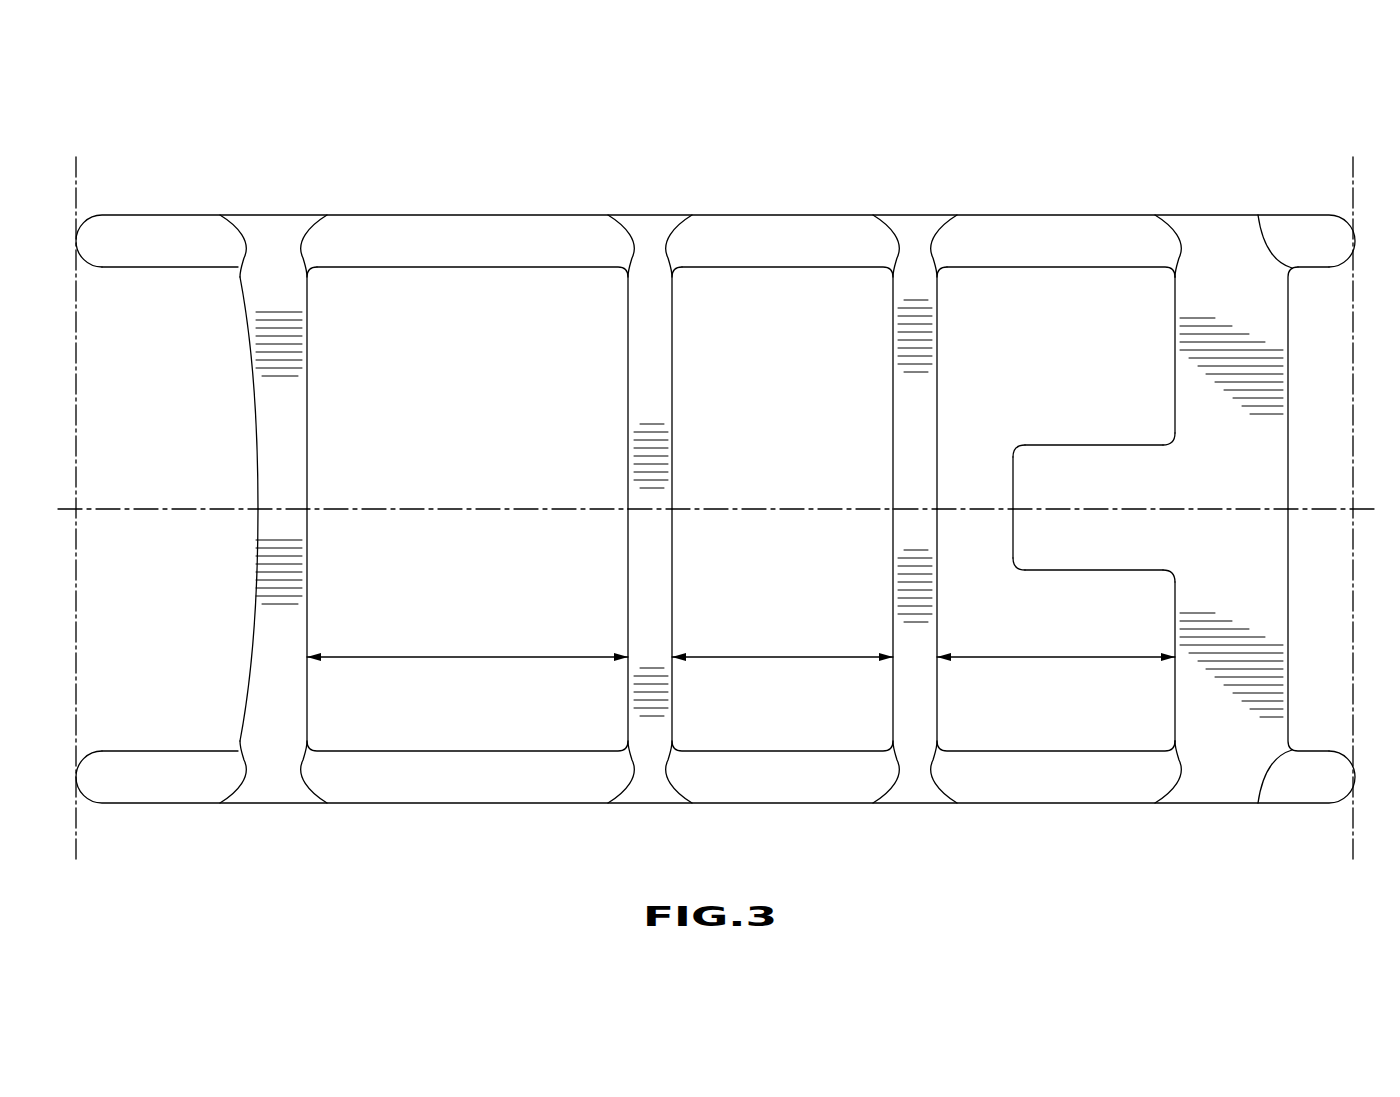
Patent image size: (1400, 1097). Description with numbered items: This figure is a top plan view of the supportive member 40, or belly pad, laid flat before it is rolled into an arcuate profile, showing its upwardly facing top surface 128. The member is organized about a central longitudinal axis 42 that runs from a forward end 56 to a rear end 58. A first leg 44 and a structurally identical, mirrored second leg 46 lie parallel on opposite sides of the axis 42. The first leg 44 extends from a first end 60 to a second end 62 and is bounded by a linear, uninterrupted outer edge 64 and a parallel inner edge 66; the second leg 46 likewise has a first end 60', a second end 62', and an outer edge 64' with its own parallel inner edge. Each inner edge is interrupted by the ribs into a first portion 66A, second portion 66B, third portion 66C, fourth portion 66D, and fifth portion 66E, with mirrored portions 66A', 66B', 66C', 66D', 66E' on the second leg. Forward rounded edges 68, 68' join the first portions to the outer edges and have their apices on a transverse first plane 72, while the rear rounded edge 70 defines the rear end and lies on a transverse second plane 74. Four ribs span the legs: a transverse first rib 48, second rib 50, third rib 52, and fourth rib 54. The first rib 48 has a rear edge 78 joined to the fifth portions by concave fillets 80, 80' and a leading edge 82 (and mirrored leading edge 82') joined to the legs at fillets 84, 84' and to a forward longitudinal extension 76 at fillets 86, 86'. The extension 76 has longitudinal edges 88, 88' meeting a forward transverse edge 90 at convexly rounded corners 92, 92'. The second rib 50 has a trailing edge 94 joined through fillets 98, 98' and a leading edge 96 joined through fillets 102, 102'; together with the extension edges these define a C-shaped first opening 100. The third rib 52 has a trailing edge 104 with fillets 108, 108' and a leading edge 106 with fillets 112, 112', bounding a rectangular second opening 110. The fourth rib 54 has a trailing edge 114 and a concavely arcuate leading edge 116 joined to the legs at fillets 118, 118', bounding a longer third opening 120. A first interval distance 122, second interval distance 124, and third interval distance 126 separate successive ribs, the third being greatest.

The supportive member 40 is at (1030, 146).
The central longitudinal axis 42 is at (418, 508).
The first leg 44 is at (446, 226).
The second leg 46 is at (466, 798).
The transverse first rib 48 is at (1180, 400).
The transverse second rib 50 is at (903, 453).
The transverse third rib 52 is at (632, 572).
The transverse fourth rib 54 is at (265, 460).
The forward end 56 is at (58, 168).
The rear end 58 is at (1366, 168).
The first end 60 is at (115, 196).
The first end 60' is at (118, 825).
The second end 62 is at (1315, 198).
The second end 62' is at (1320, 822).
The outer edge 64 is at (650, 176).
The outer edge 64' is at (535, 844).
The inner edge 66 is at (725, 534).
The first portion 66A is at (180, 388).
The second portion 66B is at (467, 388).
The third portion 66C is at (782, 388).
The fourth portion 66D is at (1088, 334).
The fifth portion 66E is at (1317, 388).
The first portion 66A' is at (178, 630).
The second portion 66B' is at (467, 708).
The third portion 66C' is at (782, 708).
The fourth portion 66D' is at (1090, 630).
The fifth portion 66E' is at (1320, 630).
The forward facing rounded edge 68 is at (51, 208).
The forward rounded edge 68' is at (49, 808).
The rearwardly facing rounded rear edge 70 is at (1355, 242).
The transverse first plane 72 is at (78, 600).
The transverse second plane 74 is at (1352, 537).
The longitudinal extension 76 is at (1050, 442).
The rear edge 78 is at (1291, 463).
The rounded concave fillet 80 is at (1267, 211).
The concave rounded fillet 80' is at (1268, 809).
The leading edge 82 is at (1129, 355).
The leading edge 82' is at (1124, 661).
The rounded fillet 84 is at (1159, 216).
The rounded fillet 84' is at (1159, 805).
The rounded fillet 86 is at (1201, 454).
The rounded fillet 86' is at (1203, 563).
The longitudinally extending edge 88 is at (1079, 430).
The longitudinal edge 88' is at (1094, 595).
The forward transverse edge 90 is at (1012, 538).
The convexly rounded corner 92 is at (981, 467).
The convexly rounded corner 92' is at (999, 592).
The trailing edge 94 is at (940, 363).
The leading edge 96 is at (893, 405).
The concavely rounded fillet 98 is at (951, 216).
The rounded fillet 98' is at (954, 805).
The first opening 100 is at (1103, 308).
The concavely rounded fillet 102 is at (875, 216).
The rounded fillet 102' is at (875, 805).
The trailing edge 104 is at (673, 383).
The leading edge 106 is at (628, 390).
The concavely rounded fillet 108 is at (690, 216).
The rounded concave fillet 108' is at (693, 805).
The second opening 110 is at (825, 710).
The rounded concave fillet 112 is at (610, 216).
The rounded fillet 112' is at (613, 805).
The trailing edge 114 is at (308, 426).
The leading edge 116 is at (257, 410).
The rounded concave fillet 118 is at (271, 216).
The concave rounded fillet 118' is at (276, 802).
The third opening 120 is at (395, 712).
The first interval distance 122 is at (1057, 657).
The second interval distance 124 is at (770, 657).
The third interval distance 126 is at (450, 657).
The top surface 128 is at (1231, 492).